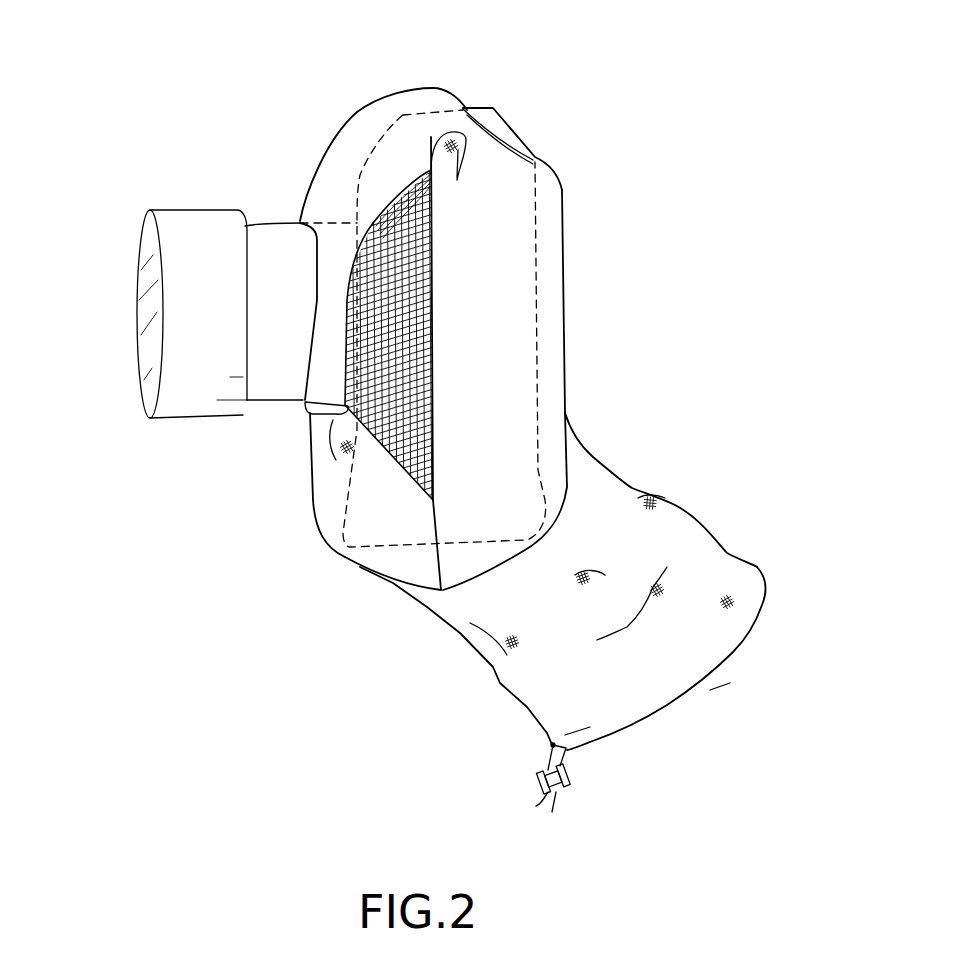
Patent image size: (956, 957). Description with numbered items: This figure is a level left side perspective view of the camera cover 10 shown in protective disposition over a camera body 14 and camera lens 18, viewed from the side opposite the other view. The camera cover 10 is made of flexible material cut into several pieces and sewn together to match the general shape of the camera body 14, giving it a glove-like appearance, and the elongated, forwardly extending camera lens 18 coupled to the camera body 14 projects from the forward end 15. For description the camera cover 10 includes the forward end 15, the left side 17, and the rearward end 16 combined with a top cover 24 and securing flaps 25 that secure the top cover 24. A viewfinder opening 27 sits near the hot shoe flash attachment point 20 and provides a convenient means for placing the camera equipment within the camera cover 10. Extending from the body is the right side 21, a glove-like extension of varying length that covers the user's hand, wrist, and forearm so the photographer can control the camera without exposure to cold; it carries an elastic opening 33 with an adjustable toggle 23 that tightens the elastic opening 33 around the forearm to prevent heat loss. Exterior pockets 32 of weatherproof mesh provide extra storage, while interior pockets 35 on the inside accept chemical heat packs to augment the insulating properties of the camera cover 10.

The camera cover 10 is at (248, 112).
The camera body 14 is at (403, 114).
The forward end 15 is at (308, 488).
The rearward end 16 is at (565, 243).
The left side 17 is at (437, 567).
The camera lens 18 is at (133, 253).
The flash attachment point 20 is at (530, 143).
The right side 21 is at (630, 485).
The adjustable toggle 23 is at (540, 773).
The top cover 24 is at (300, 200).
The securing flaps 25 is at (327, 343).
The viewfinder opening 27 is at (483, 132).
The exterior pockets 32 is at (403, 338).
The elastic opening 33 is at (727, 653).
The interior pockets 35 is at (410, 240).